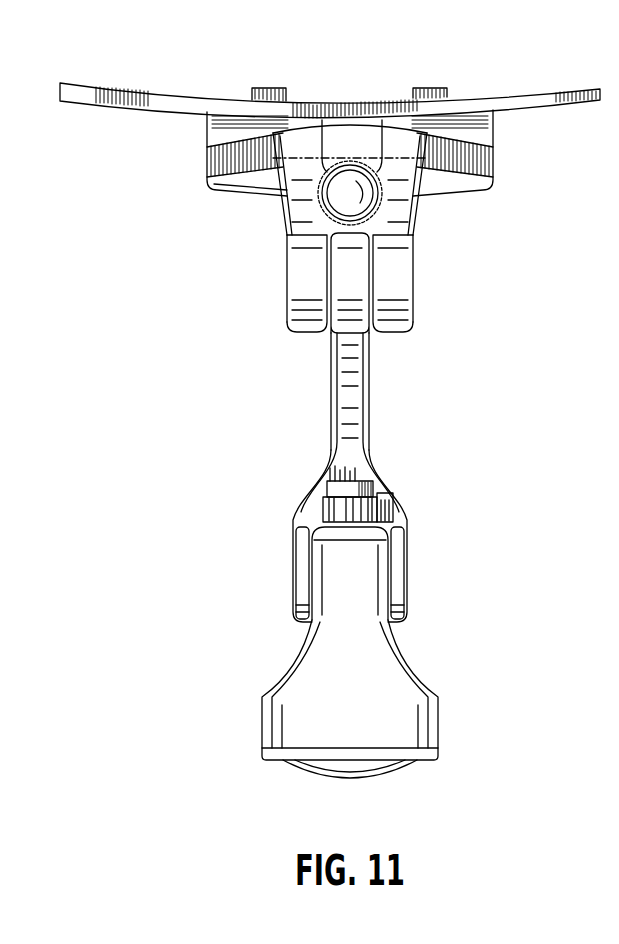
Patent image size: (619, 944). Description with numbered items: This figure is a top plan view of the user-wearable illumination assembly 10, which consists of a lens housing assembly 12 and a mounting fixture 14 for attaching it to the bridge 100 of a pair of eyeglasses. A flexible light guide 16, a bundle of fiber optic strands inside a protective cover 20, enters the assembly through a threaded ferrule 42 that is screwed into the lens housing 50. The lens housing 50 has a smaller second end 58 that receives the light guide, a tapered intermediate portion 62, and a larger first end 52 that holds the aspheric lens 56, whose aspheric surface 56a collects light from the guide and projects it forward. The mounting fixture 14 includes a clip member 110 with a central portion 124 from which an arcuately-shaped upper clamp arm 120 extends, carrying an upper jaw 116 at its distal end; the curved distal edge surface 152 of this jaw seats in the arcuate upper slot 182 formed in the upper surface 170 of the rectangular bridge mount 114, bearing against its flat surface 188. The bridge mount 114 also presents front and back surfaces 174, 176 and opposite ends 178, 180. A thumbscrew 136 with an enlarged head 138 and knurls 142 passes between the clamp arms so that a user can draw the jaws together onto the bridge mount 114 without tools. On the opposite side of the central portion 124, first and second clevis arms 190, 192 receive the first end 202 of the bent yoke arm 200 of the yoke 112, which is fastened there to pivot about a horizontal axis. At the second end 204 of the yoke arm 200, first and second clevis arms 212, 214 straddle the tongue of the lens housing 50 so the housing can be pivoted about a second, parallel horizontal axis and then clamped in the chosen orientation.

The illumination assembly 10 is at (112, 427).
The lens housing assembly 12 is at (446, 716).
The mounting fixture 14 is at (458, 404).
The light guide 16 is at (326, 492).
The protective cover 20 is at (377, 490).
The ferrule 42 is at (327, 512).
The lens housing 50 is at (335, 708).
The first end 52 is at (273, 761).
The lens 56 is at (382, 778).
The aspheric surface 56a is at (357, 777).
The second end 58 is at (383, 510).
The intermediate portion 62 is at (302, 637).
The bridge 100 is at (548, 86).
The clip member 110 is at (282, 334).
The yoke 112 is at (376, 414).
The bridge mount 114 is at (209, 183).
The upper jaw 116 is at (400, 135).
The upper clamp arm 120 is at (305, 148).
The central portion 124 is at (417, 212).
The thumbscrew 136 is at (323, 213).
The head 138 is at (327, 147).
The knurls 142 is at (380, 150).
The distal edge surface 152 is at (352, 127).
The upper surface 170 is at (223, 116).
The front surface 174 is at (233, 194).
The back surface 176 is at (473, 112).
The end 178 is at (207, 127).
The end 180 is at (493, 127).
The upper slot 182 is at (243, 167).
The flat surface 188 is at (487, 163).
The first clevis arm 190 is at (295, 292).
The second clevis arm 192 is at (407, 285).
The yoke arm 200 is at (338, 392).
The first end 202 is at (353, 313).
The second end 204 is at (403, 627).
The first clevis arm 212 is at (300, 573).
The second clevis arm 214 is at (400, 572).